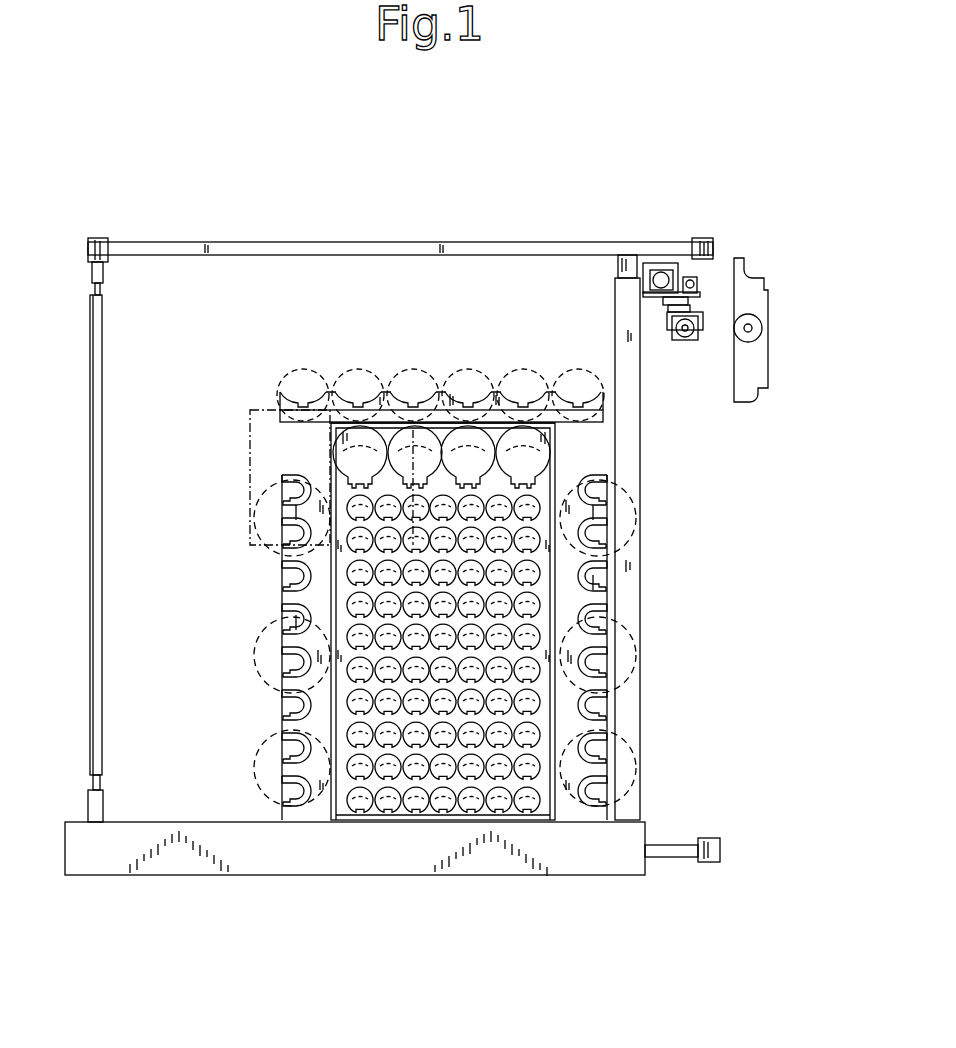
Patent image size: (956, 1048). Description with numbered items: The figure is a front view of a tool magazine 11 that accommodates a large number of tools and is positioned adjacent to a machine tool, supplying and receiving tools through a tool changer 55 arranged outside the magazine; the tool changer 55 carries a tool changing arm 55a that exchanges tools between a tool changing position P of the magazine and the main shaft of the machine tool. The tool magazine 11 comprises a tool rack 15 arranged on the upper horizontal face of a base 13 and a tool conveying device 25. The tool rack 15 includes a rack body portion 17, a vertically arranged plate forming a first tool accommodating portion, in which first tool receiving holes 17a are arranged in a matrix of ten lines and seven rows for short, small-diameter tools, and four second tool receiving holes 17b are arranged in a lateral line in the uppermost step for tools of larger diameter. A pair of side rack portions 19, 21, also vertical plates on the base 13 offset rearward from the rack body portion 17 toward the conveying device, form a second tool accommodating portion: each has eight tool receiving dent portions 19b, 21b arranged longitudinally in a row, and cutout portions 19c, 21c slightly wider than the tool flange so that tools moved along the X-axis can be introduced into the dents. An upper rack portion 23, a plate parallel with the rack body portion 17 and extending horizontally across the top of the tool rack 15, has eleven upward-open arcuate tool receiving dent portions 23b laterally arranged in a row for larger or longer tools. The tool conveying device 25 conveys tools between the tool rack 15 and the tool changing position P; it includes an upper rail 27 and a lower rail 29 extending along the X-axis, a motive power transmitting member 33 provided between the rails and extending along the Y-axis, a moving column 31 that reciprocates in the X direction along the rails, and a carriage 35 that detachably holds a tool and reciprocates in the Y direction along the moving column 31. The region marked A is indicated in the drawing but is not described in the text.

The tool magazine 11 is at (628, 133).
The base 13 is at (558, 858).
The tool rack 15 is at (270, 442).
The rack body portion 17 is at (417, 684).
The first tool receiving holes 17a is at (423, 808).
The second tool receiving holes 17b is at (330, 443).
The side rack portion 19 is at (288, 476).
The tool receiving dent portions 19b is at (297, 512).
The cutout portions 19c is at (290, 618).
The side rack portion 21 is at (566, 480).
The tool receiving dent portions 21b is at (590, 516).
The cutout portions 21c is at (606, 578).
The upper rack portion 23 is at (283, 408).
The tool receiving dent portions 23b is at (303, 401).
The tool conveying device 25 is at (113, 220).
The upper rail 27 is at (302, 242).
The lower rail 29 is at (677, 852).
The moving column 31 is at (625, 370).
The motive power transmitting member 33 is at (90, 425).
The carriage 35 is at (700, 291).
The tool changer 55 is at (774, 332).
The tool changing arm 55a is at (766, 318).
The tool changing position P is at (688, 335).
The region A is at (250, 535).